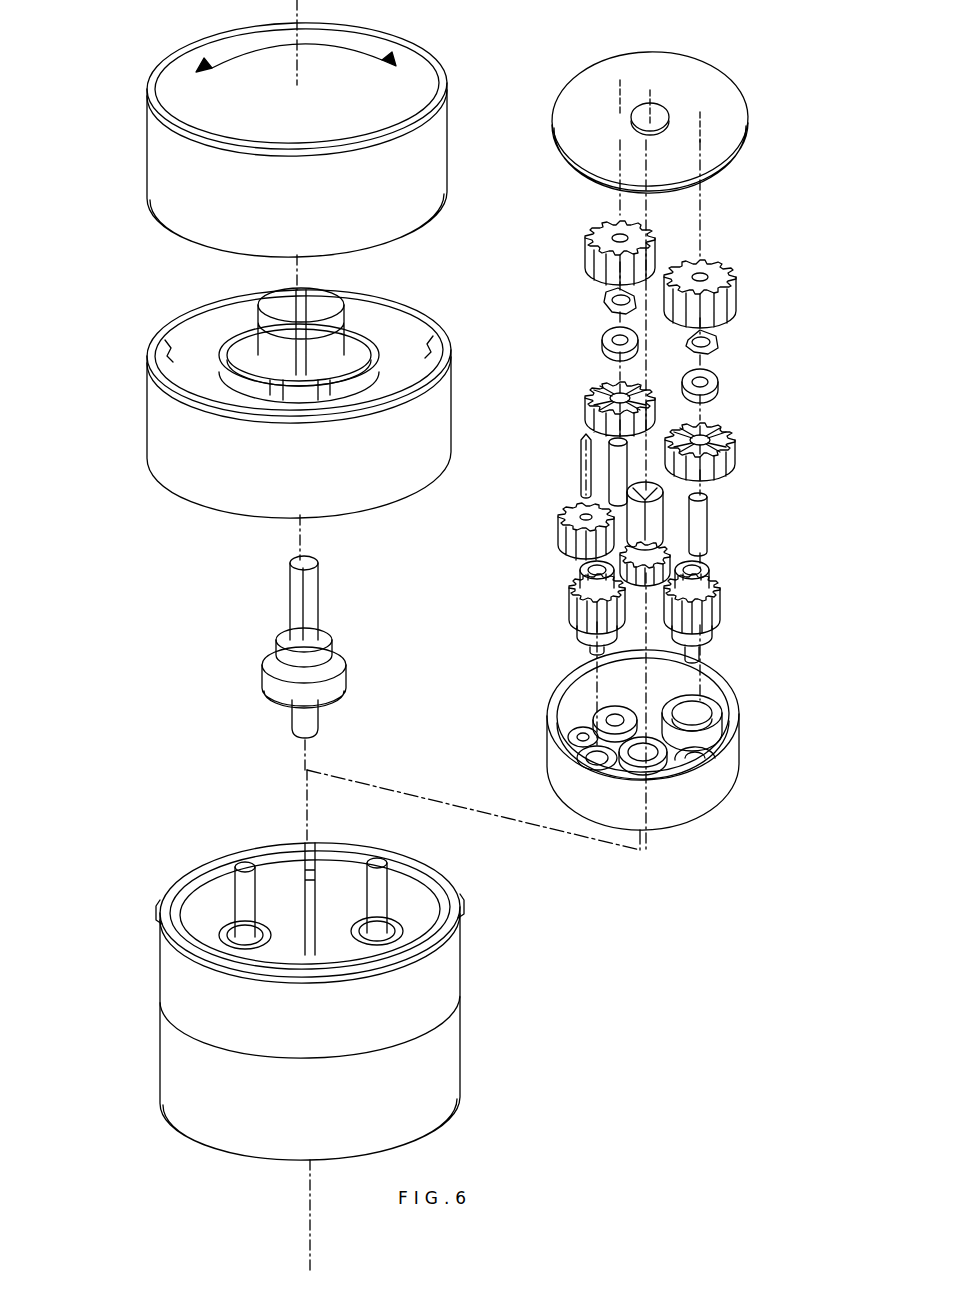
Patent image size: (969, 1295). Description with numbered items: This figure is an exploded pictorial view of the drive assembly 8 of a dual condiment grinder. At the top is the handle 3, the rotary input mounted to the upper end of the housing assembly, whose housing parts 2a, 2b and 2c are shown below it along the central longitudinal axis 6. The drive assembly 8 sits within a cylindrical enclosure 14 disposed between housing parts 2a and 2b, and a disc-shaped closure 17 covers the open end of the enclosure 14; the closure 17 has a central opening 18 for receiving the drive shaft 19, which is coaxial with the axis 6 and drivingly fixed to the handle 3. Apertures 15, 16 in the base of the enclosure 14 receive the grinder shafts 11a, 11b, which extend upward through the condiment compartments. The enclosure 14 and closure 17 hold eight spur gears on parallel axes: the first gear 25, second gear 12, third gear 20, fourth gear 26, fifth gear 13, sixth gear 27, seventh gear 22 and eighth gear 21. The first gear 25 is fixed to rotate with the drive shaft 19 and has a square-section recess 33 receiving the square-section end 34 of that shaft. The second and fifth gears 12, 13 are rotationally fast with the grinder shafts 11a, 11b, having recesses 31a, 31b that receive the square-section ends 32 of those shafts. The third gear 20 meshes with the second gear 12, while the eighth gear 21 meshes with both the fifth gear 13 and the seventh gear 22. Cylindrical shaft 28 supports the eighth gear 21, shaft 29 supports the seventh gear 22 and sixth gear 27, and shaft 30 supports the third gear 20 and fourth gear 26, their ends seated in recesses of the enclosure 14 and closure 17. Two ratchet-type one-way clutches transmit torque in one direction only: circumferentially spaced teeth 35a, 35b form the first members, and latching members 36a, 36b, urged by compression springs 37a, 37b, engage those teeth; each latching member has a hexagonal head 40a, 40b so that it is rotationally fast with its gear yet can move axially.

The handle 3 is at (112, 155).
The housing part 2a is at (162, 433).
The housing part 2b is at (318, 940).
The housing part 2c is at (178, 1075).
The central longitudinal axis 6 is at (305, 800).
The drive assembly 8 is at (681, 782).
The grinder shaft 11a is at (215, 905).
The grinder shaft 11b is at (405, 905).
The second spur gear 12 is at (736, 612).
The fifth spur gear 13 is at (544, 608).
The cylindrical enclosure 14 is at (700, 795).
The aperture 15 is at (700, 725).
The aperture 16 is at (603, 752).
The disc-shaped closure 17 is at (671, 99).
The central opening 18 is at (658, 112).
The drive shaft 19 is at (334, 647).
The third spur gear 20 is at (738, 283).
The eighth spur gear 21 is at (560, 515).
The seventh spur gear 22 is at (612, 247).
The first spur gear 25 is at (668, 562).
The fourth spur gear 26 is at (741, 435).
The sixth spur gear 27 is at (589, 403).
The cylindrical shaft 28 is at (582, 448).
The cylindrical shaft 29 is at (612, 470).
The cylindrical shaft 30 is at (708, 515).
The recess 31a is at (580, 568).
The recess 31b is at (710, 575).
The square-section end 32 is at (245, 895).
The square-section recess 33 is at (655, 500).
The square-section end 34 is at (318, 713).
The teeth 35a is at (610, 392).
The teeth 35b is at (715, 432).
The latching member 36a is at (585, 336).
The latching member 36b is at (750, 366).
The compression spring 37a is at (603, 300).
The compression spring 37b is at (718, 338).
The hexagonal head 40a is at (603, 345).
The hexagonal head 40b is at (712, 372).